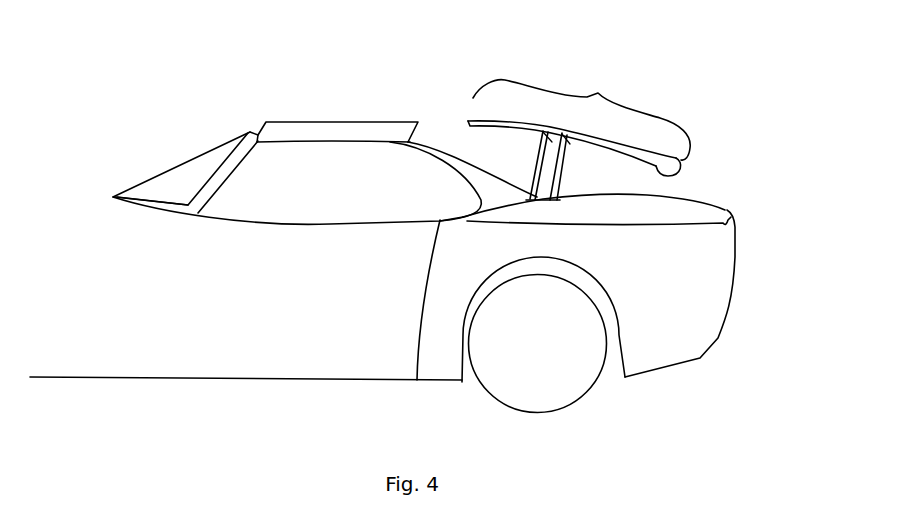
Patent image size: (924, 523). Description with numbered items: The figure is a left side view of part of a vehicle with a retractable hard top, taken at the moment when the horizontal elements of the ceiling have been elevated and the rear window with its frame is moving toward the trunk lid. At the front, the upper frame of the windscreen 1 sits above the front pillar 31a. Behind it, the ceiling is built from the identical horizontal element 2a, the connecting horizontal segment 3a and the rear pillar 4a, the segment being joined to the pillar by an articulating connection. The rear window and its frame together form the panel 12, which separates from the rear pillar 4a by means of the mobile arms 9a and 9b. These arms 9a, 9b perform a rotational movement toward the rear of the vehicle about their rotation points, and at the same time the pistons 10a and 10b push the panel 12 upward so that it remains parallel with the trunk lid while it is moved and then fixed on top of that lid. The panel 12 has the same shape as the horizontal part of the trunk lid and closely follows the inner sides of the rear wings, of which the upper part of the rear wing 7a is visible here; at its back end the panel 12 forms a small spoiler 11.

The upper frame of the windscreen 1 is at (251, 130).
The horizontal element 2a is at (281, 120).
The connecting horizontal segment 3a is at (350, 130).
The rear pillar 4a is at (446, 146).
The front pillar 31a is at (217, 178).
The rear wing 7a is at (632, 217).
The mobile arm 9a is at (559, 187).
The mobile arm 9b is at (542, 176).
The piston 10a is at (574, 146).
The piston 10b is at (554, 134).
The spoiler 11 is at (682, 161).
The panel 12 is at (599, 94).